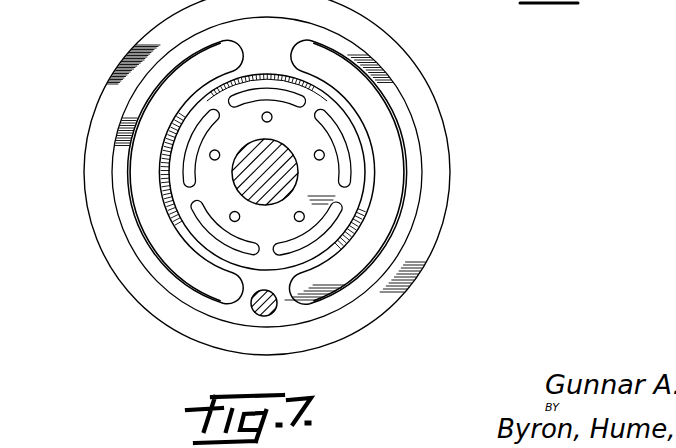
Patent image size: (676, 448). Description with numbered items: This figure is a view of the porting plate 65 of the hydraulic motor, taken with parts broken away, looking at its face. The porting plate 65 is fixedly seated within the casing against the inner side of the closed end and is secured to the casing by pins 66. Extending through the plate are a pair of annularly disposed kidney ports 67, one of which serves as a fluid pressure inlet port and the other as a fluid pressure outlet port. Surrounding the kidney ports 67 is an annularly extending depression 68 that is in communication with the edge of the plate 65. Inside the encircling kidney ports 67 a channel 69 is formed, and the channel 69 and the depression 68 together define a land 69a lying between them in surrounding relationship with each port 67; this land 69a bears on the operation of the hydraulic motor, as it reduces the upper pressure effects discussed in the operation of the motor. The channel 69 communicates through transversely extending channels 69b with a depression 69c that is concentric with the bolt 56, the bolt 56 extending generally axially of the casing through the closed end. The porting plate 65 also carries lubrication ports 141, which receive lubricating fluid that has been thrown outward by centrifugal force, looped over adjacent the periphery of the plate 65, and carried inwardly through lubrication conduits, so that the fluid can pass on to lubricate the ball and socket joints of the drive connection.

The bolt 56 is at (257, 146).
The porting plate 65 is at (426, 266).
The pins 66 is at (278, 312).
The kidney ports 67 is at (400, 151).
The depression 68 is at (441, 184).
The channel 69 is at (269, 78).
The land 69a is at (368, 63).
The transversely extending channels 69b is at (188, 203).
The depression 69c is at (323, 137).
The lubrication ports 141 is at (296, 221).